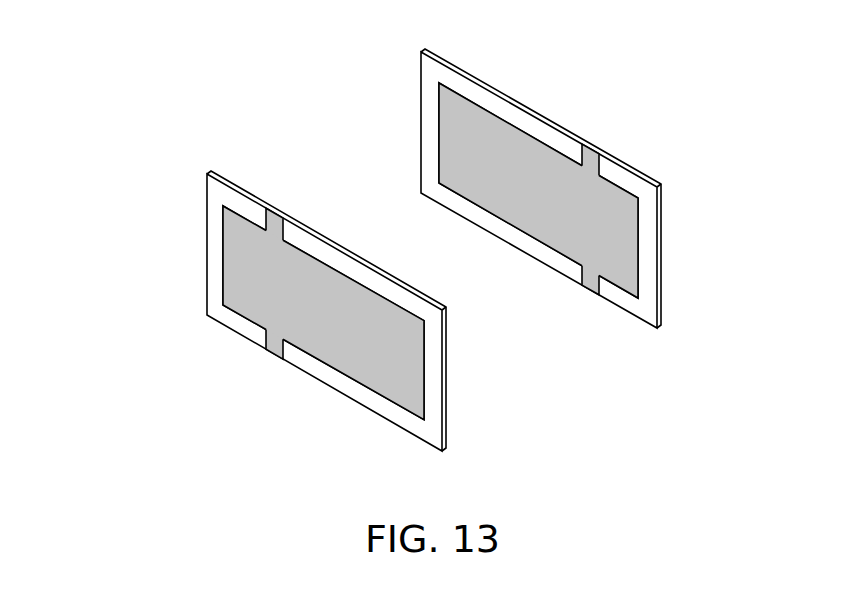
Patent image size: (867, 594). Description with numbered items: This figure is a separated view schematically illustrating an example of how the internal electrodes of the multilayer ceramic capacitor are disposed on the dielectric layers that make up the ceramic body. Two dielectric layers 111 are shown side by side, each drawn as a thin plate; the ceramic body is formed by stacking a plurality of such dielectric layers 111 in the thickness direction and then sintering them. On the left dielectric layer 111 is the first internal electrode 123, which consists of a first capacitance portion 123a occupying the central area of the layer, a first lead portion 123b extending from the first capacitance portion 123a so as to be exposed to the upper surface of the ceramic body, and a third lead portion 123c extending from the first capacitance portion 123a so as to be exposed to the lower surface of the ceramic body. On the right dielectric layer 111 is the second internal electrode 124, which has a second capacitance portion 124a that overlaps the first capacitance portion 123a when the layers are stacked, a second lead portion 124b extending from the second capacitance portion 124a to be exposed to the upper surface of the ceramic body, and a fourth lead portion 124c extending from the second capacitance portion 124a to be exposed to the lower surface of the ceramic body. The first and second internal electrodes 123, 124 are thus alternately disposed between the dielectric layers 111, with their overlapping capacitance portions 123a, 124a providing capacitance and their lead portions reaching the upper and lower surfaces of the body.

The dielectric layer 111 is at (383, 405).
The first internal electrode 123 is at (237, 311).
The first capacitance portion 123a is at (272, 282).
The first lead portion 123b is at (272, 225).
The third lead portion 123c is at (272, 342).
The second internal electrode 124 is at (624, 190).
The second capacitance portion 124a is at (587, 210).
The second lead portion 124b is at (588, 153).
The fourth lead portion 124c is at (587, 270).